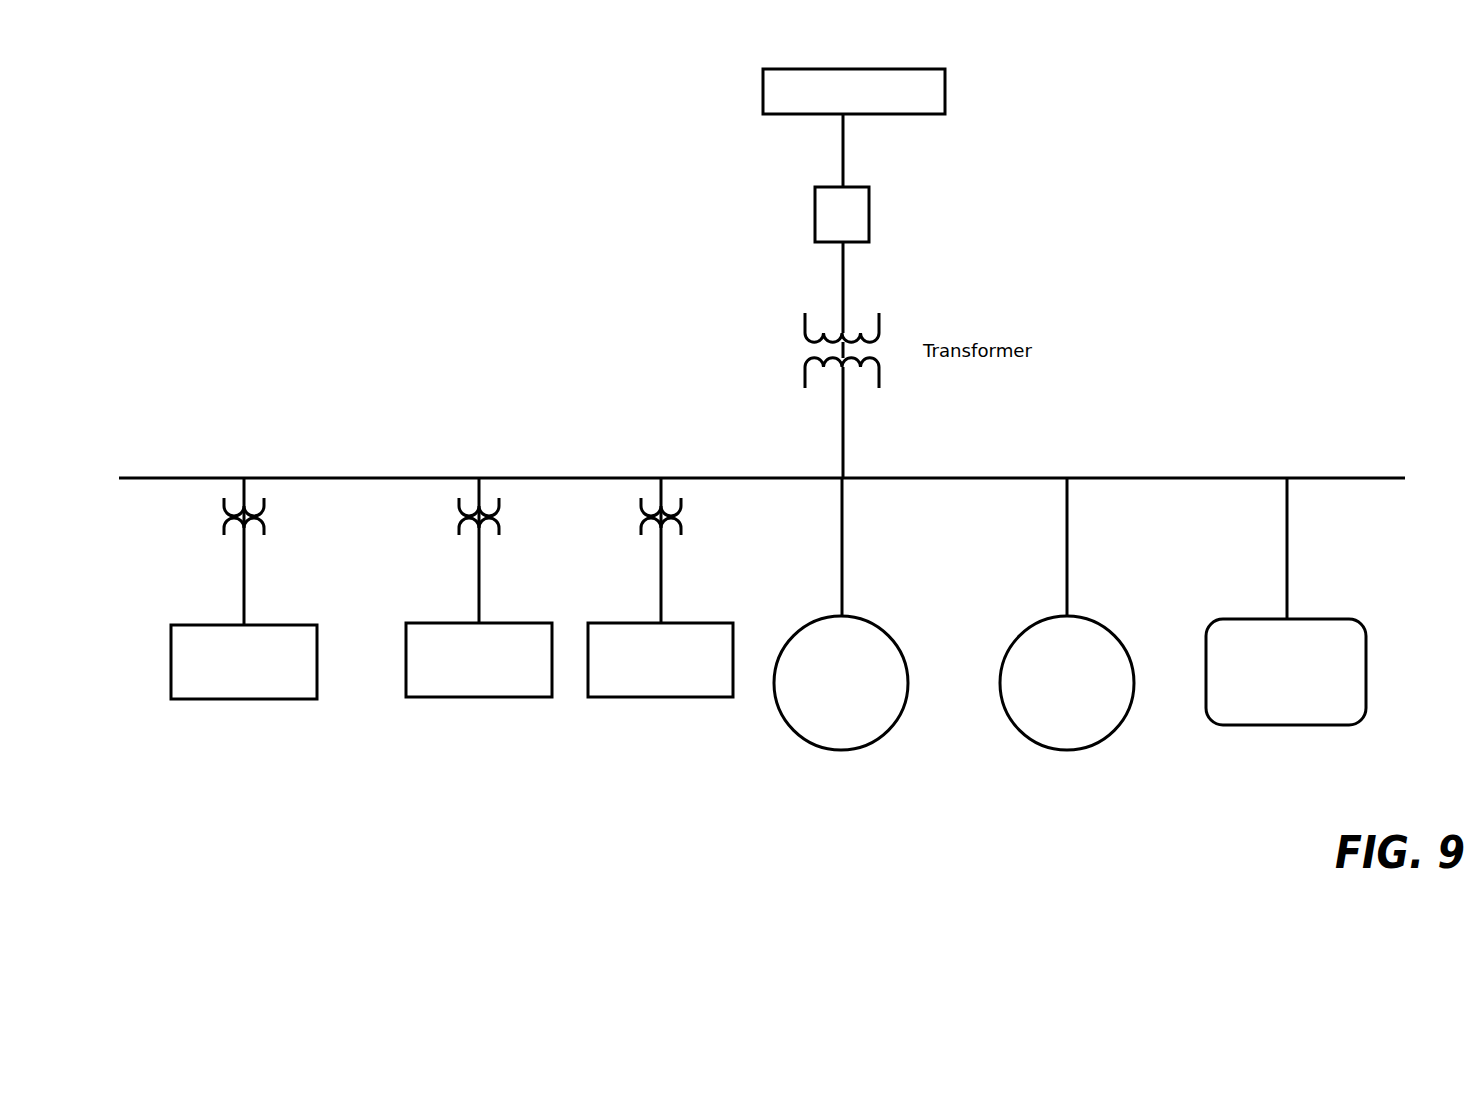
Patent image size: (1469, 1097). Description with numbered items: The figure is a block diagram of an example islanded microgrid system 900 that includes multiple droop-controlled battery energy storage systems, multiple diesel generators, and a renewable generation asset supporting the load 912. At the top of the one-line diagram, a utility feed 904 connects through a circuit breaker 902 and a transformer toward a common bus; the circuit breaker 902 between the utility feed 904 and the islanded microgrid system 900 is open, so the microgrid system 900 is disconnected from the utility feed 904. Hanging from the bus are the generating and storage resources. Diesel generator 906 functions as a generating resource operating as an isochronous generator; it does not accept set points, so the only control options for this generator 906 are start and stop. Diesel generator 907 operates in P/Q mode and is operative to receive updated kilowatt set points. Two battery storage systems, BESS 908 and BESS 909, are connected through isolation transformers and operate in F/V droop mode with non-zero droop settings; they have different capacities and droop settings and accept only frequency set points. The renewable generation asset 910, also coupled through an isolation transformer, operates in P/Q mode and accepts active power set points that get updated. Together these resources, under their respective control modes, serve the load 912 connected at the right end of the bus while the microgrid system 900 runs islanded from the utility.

The islanded microgrid system 900 is at (549, 89).
The circuit breaker 902 is at (810, 215).
The utility feed 904 is at (902, 68).
The diesel generator 906 is at (898, 644).
The diesel generator 907 is at (1123, 645).
The BESS 908 is at (204, 624).
The BESS 909 is at (440, 622).
The renewable generation asset 910 is at (688, 622).
The load 912 is at (1313, 619).